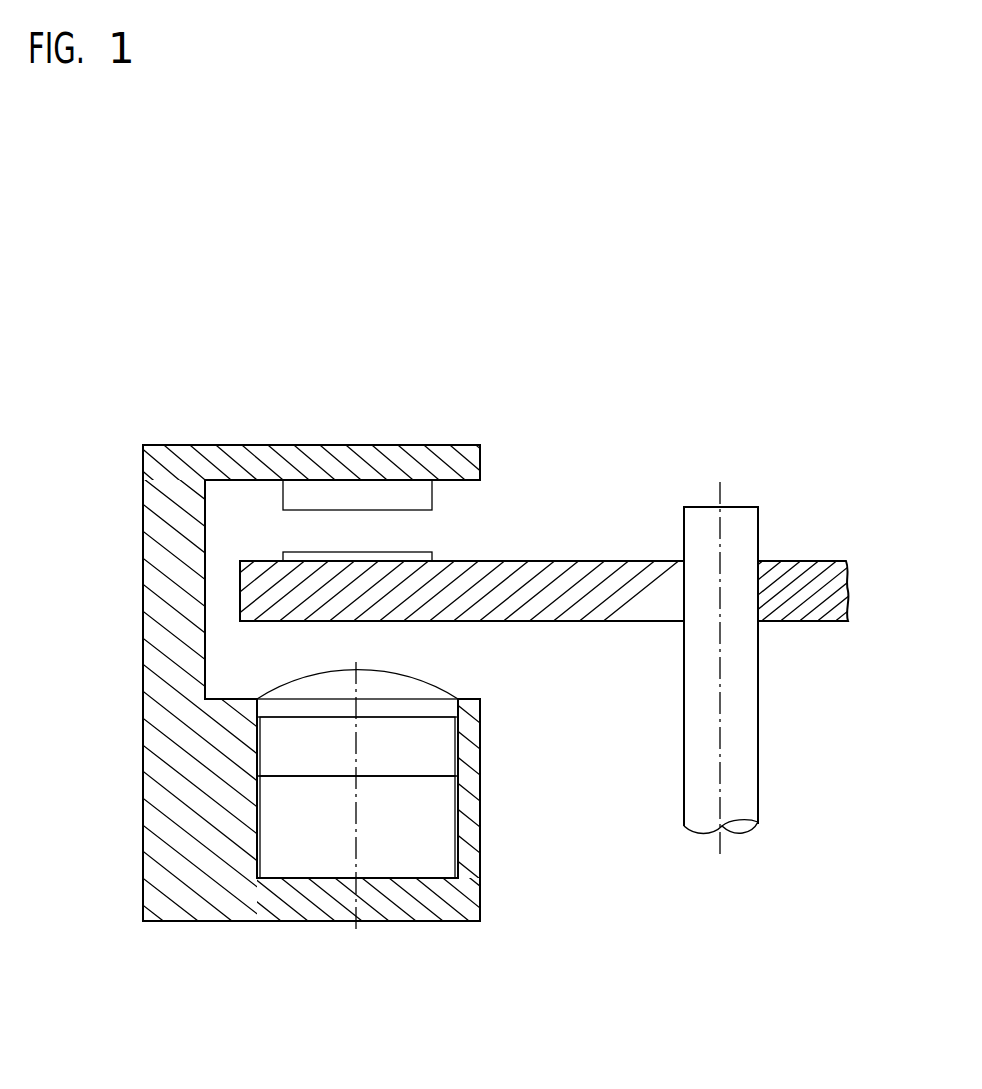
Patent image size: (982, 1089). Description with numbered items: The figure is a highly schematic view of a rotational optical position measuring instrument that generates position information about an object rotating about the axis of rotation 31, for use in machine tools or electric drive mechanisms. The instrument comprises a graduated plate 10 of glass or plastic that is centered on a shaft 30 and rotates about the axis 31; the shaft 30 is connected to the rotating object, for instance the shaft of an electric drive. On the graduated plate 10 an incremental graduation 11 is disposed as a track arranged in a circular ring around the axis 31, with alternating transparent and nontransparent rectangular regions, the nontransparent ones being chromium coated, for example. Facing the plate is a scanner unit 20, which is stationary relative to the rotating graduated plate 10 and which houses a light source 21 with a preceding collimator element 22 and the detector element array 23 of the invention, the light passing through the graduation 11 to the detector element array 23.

The graduated plate 10 is at (628, 587).
The incremental graduation 11 is at (432, 558).
The scanner unit 20 is at (180, 887).
The light source 21 is at (437, 749).
The collimator element 22 is at (403, 685).
The detector element array 23 is at (423, 496).
The shaft 30 is at (742, 783).
The axis of rotation 31 is at (722, 525).